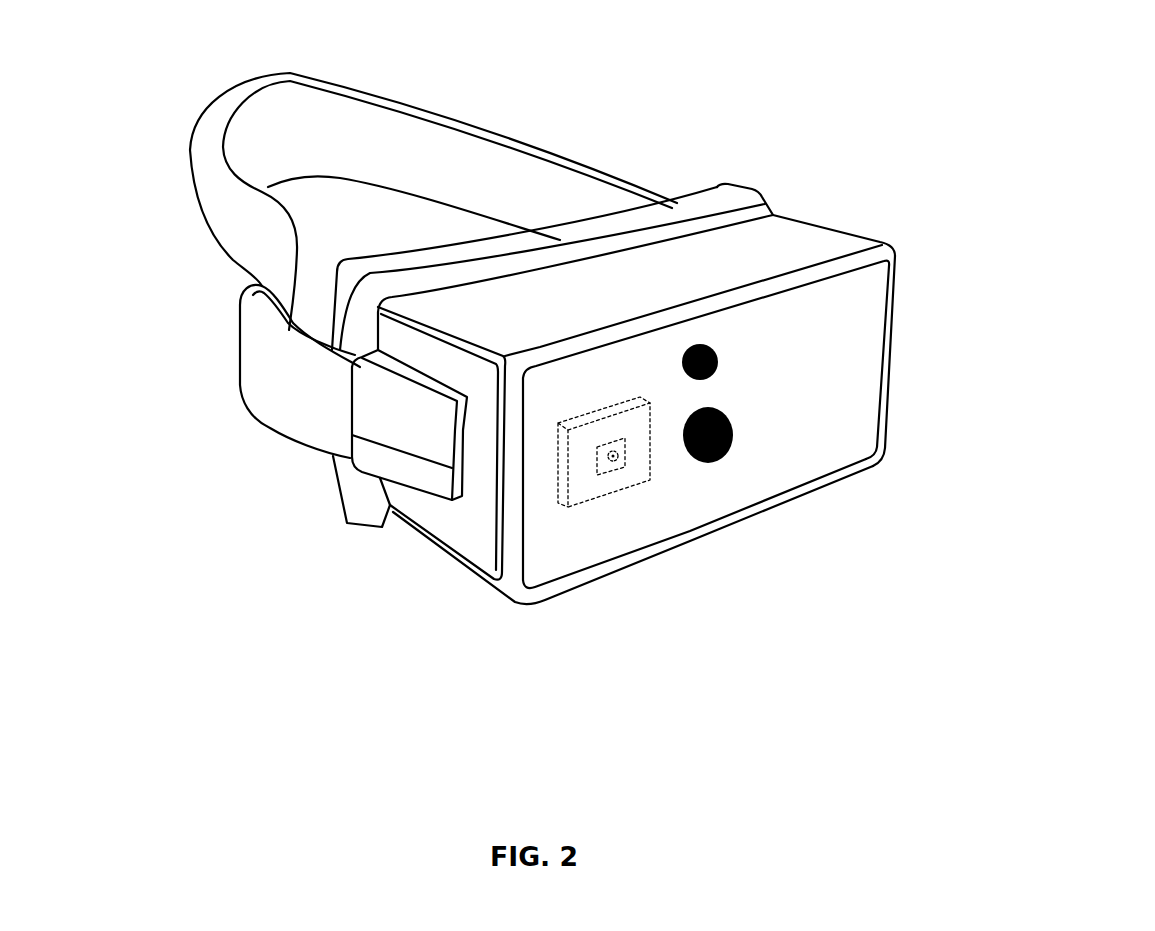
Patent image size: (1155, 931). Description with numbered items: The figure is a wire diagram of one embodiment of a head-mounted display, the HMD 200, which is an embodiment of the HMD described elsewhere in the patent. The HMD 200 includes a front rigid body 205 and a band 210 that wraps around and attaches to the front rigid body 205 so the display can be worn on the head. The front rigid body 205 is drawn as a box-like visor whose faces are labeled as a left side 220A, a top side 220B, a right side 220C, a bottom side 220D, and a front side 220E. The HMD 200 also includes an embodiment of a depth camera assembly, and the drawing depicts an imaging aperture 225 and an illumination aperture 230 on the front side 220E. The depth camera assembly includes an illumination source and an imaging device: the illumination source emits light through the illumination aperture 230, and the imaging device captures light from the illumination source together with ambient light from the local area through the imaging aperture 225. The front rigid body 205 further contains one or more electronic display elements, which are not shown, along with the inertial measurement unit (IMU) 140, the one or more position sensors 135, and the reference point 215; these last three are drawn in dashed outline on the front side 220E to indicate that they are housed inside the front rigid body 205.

The HMD 200 is at (88, 69).
The front rigid body 205 is at (605, 421).
The band 210 is at (550, 147).
The left side 220A is at (858, 232).
The top side 220B is at (470, 303).
The right side 220C is at (473, 520).
The bottom side 220D is at (425, 563).
The front side 220E is at (547, 553).
The imaging aperture 225 is at (733, 437).
The illumination aperture 230 is at (717, 348).
The position sensors 135 is at (600, 468).
The inertial measurement unit (IMU) 140 is at (654, 472).
The reference point 215 is at (615, 462).